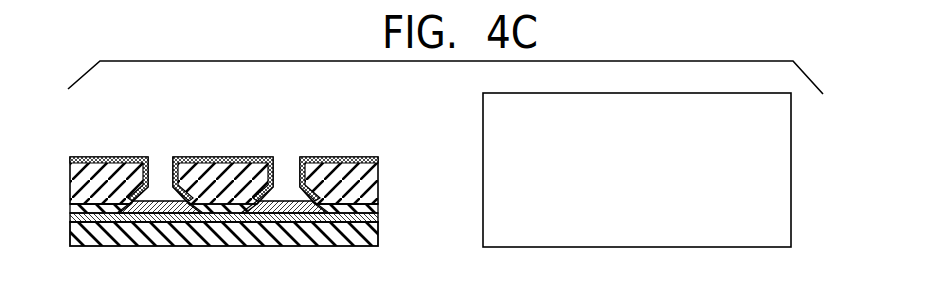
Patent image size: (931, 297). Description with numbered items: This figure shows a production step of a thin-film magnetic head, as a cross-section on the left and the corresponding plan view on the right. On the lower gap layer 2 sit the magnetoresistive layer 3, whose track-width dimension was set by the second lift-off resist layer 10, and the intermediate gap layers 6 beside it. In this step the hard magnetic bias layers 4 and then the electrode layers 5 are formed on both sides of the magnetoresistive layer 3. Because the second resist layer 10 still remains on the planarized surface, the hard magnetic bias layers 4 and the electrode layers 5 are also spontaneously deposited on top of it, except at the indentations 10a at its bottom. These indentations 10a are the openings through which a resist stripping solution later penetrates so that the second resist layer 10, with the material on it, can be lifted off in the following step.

The lower gap layer 2 is at (368, 237).
The magnetoresistive layer 3 is at (226, 213).
The hard magnetic bias layers 4 is at (165, 218).
The electrode layers 5 is at (165, 198).
The intermediate gap layer 6 is at (70, 211).
The second lift-off resist layer 10 is at (111, 168).
The indentations 10a is at (138, 216).